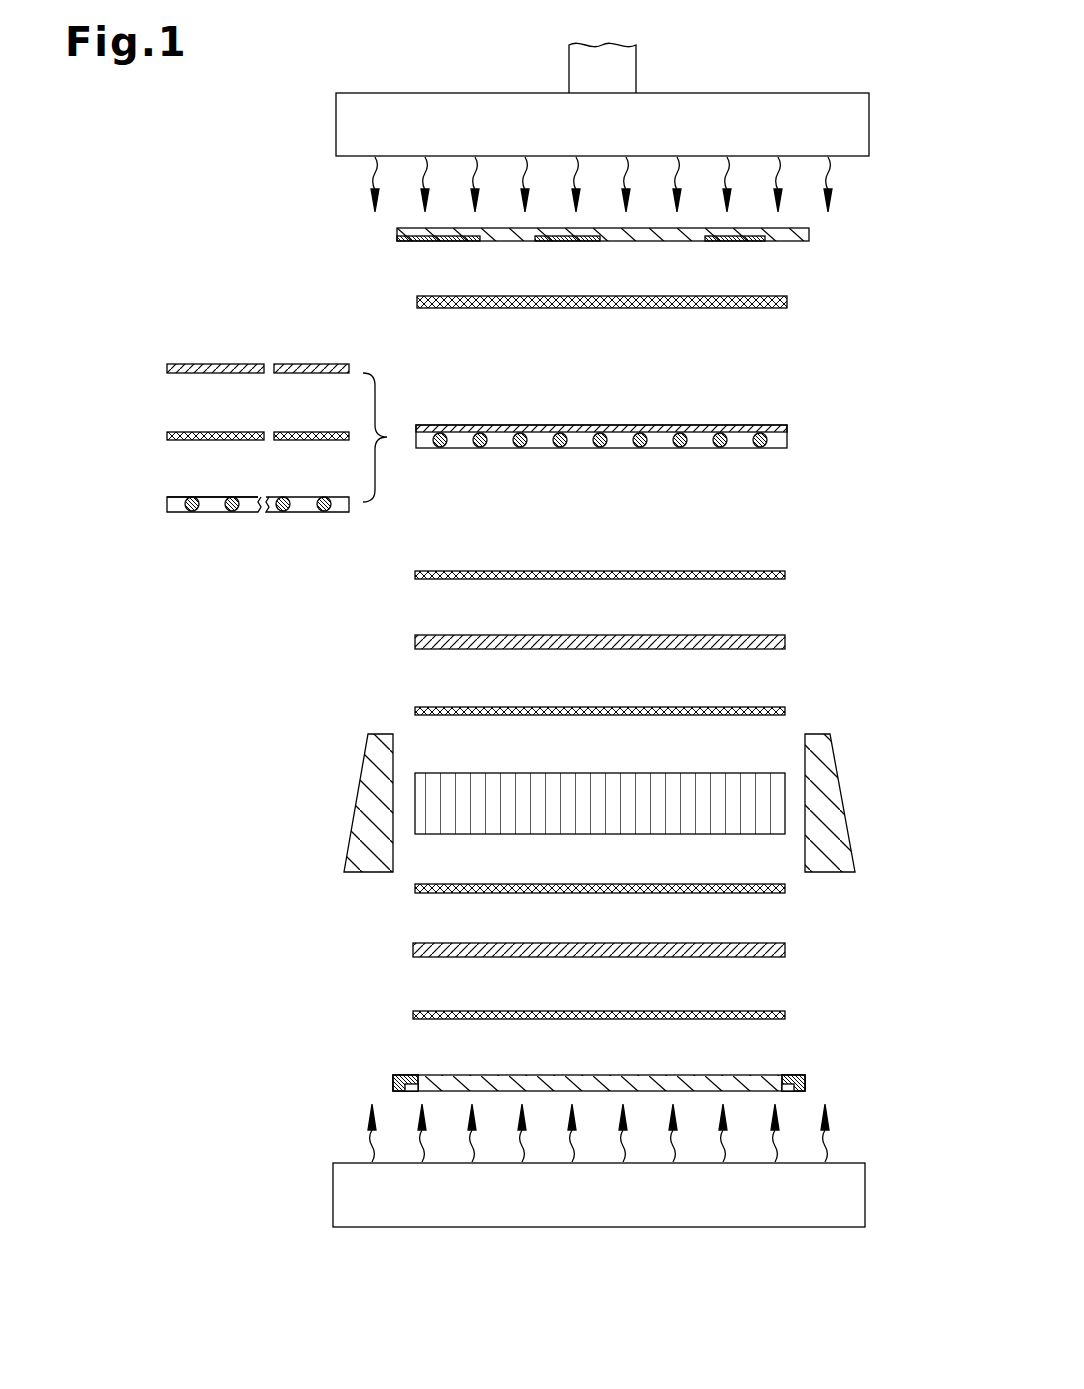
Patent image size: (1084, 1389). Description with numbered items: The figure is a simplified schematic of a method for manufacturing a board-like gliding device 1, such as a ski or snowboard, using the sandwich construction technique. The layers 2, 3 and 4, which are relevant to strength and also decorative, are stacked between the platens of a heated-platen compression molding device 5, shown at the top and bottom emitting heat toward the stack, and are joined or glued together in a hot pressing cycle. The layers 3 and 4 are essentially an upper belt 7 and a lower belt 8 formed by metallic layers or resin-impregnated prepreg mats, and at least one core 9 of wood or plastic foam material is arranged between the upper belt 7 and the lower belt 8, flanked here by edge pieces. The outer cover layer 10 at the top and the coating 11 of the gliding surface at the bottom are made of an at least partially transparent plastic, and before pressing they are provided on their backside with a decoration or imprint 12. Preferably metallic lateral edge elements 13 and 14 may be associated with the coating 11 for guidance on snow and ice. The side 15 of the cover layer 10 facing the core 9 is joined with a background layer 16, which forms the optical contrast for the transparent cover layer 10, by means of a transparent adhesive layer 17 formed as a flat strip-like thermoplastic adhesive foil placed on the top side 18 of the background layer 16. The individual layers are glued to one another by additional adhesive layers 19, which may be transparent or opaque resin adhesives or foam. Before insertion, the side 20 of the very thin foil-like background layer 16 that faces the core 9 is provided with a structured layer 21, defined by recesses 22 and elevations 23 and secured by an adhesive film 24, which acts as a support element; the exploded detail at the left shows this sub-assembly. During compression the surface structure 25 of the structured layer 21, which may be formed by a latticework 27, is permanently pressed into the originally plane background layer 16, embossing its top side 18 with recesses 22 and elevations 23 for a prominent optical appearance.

The board-like gliding device 1 is at (549, 1075).
The layer 2 is at (625, 244).
The layer 3 is at (593, 655).
The layer 4 is at (579, 947).
The heated-platen compression molding device 5 is at (800, 72).
The upper belt 7 is at (787, 642).
The lower belt 8 is at (787, 950).
The core 9 is at (435, 772).
The cover layer 10 is at (619, 266).
The coating of the gliding surface 11 is at (598, 1053).
The imprint 12 is at (410, 241).
The lateral edge element 13 is at (400, 1078).
The lateral edge element 14 is at (805, 1078).
The side facing the core 15 is at (505, 242).
The background layer 16 is at (469, 363).
The adhesive layer 17 is at (787, 300).
The top side of the background layer 18 is at (469, 363).
The additional adhesive layers 19 is at (787, 575).
The side of the background layer 20 is at (218, 372).
The structured layer 21 is at (470, 525).
The recesses 22 is at (212, 512).
The elevations 23 is at (232, 512).
The adhesive film 24 is at (238, 432).
The surface structure 25 is at (213, 497).
The latticework 27 is at (350, 512).